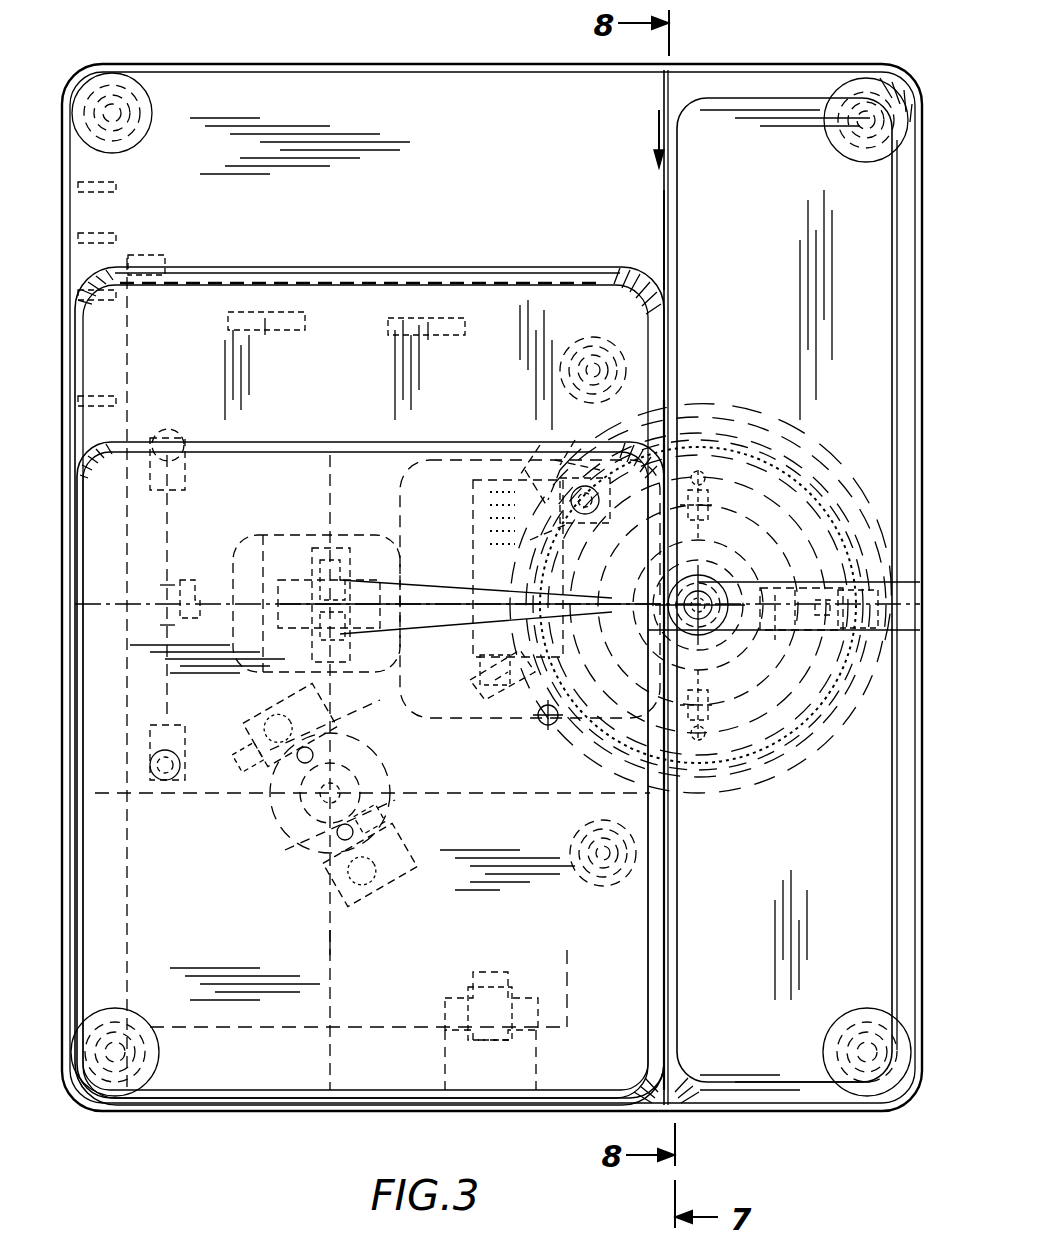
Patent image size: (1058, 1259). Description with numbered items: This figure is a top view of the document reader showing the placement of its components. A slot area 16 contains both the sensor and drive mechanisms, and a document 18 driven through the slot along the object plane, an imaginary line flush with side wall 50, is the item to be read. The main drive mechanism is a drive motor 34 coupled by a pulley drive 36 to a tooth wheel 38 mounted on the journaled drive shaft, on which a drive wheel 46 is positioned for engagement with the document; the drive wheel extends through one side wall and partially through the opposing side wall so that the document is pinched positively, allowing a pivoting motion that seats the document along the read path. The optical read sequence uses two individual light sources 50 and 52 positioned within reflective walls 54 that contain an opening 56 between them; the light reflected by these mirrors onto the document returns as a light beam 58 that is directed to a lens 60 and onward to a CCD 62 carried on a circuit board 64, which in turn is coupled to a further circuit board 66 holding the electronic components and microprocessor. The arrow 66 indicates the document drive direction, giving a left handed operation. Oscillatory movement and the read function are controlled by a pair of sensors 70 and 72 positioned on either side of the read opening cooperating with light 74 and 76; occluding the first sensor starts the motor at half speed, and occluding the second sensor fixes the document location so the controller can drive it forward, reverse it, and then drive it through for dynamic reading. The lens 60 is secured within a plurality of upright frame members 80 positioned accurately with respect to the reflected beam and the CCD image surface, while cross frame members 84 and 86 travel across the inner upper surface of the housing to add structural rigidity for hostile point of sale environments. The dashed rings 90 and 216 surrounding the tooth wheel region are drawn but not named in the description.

The slot area 16 is at (652, 288).
The document 18 is at (663, 248).
The drive motor 34 is at (302, 832).
The pulley drive 36 is at (400, 805).
The tooth wheel 38 is at (768, 770).
The drive wheel 46 is at (726, 586).
The side wall / light source 50 is at (478, 542).
The light source 52 is at (480, 680).
The reflective walls 54 is at (523, 457).
The opening 56 is at (510, 488).
The light beam 58 is at (490, 590).
The lens 60 is at (312, 575).
The CCD 62 is at (196, 605).
The circuit board 64 is at (172, 520).
The circuit board / arrow 66 is at (637, 600).
The first sensor 70 is at (708, 512).
The second sensor 72 is at (702, 677).
The light 74 is at (590, 475).
The light 76 is at (545, 722).
The upright frame members 80 is at (340, 548).
The cross frame member 84 is at (175, 800).
The cross frame member 86 is at (338, 942).
The gear rim 90 is at (815, 760).
The gear teeth ring 216 is at (690, 805).